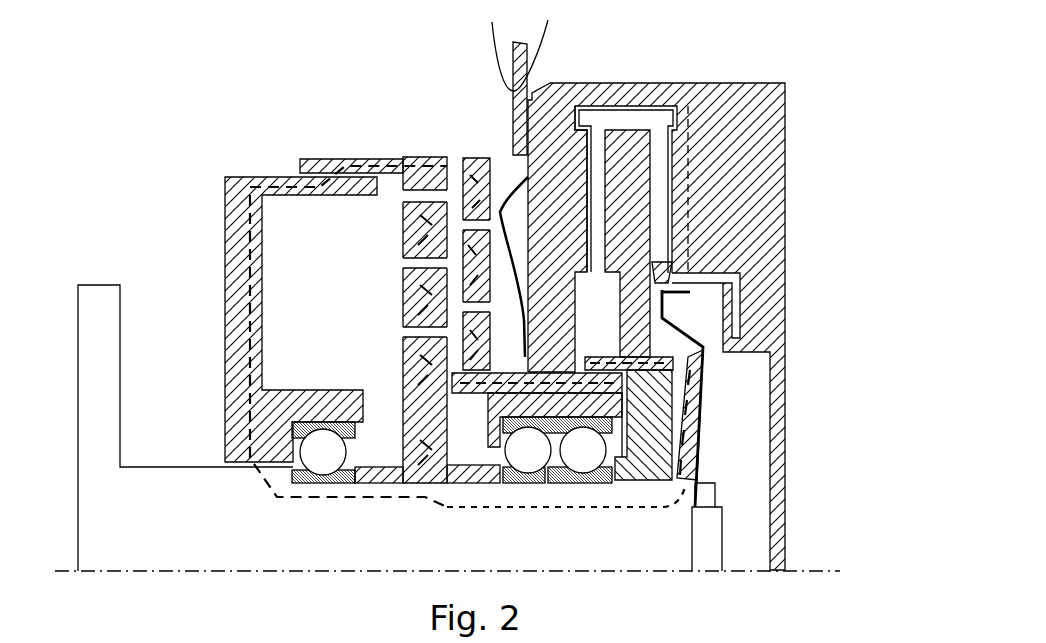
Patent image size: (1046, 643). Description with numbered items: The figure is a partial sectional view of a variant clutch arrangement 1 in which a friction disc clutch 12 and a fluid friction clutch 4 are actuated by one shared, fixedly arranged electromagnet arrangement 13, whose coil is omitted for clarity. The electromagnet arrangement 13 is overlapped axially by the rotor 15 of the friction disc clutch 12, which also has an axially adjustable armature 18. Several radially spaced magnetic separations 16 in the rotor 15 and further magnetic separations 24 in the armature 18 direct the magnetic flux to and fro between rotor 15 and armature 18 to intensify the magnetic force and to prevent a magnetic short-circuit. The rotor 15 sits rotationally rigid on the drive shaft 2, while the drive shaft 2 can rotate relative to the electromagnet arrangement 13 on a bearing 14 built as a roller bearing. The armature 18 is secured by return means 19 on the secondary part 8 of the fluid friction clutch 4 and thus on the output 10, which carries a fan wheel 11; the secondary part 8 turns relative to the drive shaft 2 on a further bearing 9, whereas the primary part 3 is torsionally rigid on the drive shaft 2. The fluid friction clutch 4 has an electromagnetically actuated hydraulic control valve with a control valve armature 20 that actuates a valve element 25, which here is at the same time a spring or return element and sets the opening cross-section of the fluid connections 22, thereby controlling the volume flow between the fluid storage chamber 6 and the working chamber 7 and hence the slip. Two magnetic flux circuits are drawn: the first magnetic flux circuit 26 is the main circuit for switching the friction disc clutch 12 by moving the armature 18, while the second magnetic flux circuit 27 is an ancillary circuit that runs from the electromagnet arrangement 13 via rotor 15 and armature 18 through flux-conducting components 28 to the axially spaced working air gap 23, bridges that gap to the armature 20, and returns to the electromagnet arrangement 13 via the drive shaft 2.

The clutch arrangement 1 is at (692, 62).
The drive shaft 2 is at (185, 555).
The primary part 3 is at (663, 450).
The fluid friction clutch 4 is at (596, 575).
The fluid storage chamber 6 is at (752, 513).
The working chamber 7 is at (670, 193).
The secondary part 8 is at (587, 155).
The bearing 9 is at (526, 450).
The output 10 is at (573, 92).
The fan wheel 11 is at (527, 47).
The friction disc clutch 12 is at (440, 156).
The electromagnet arrangement 13 is at (233, 177).
The bearing 14 is at (325, 455).
The rotor 15 is at (320, 159).
The magnetic separations 16 is at (403, 332).
The armature 18 is at (484, 158).
The return means 19 is at (690, 142).
The armature 20 is at (700, 358).
The fluid connections 22 is at (740, 276).
The working air gap 23 is at (680, 393).
The magnetic separations 24 is at (468, 302).
The valve element 25 is at (662, 297).
The first magnetic flux circuit 26 is at (282, 176).
The second magnetic flux circuit 27 is at (440, 508).
The flux-conducting components 28 is at (617, 458).